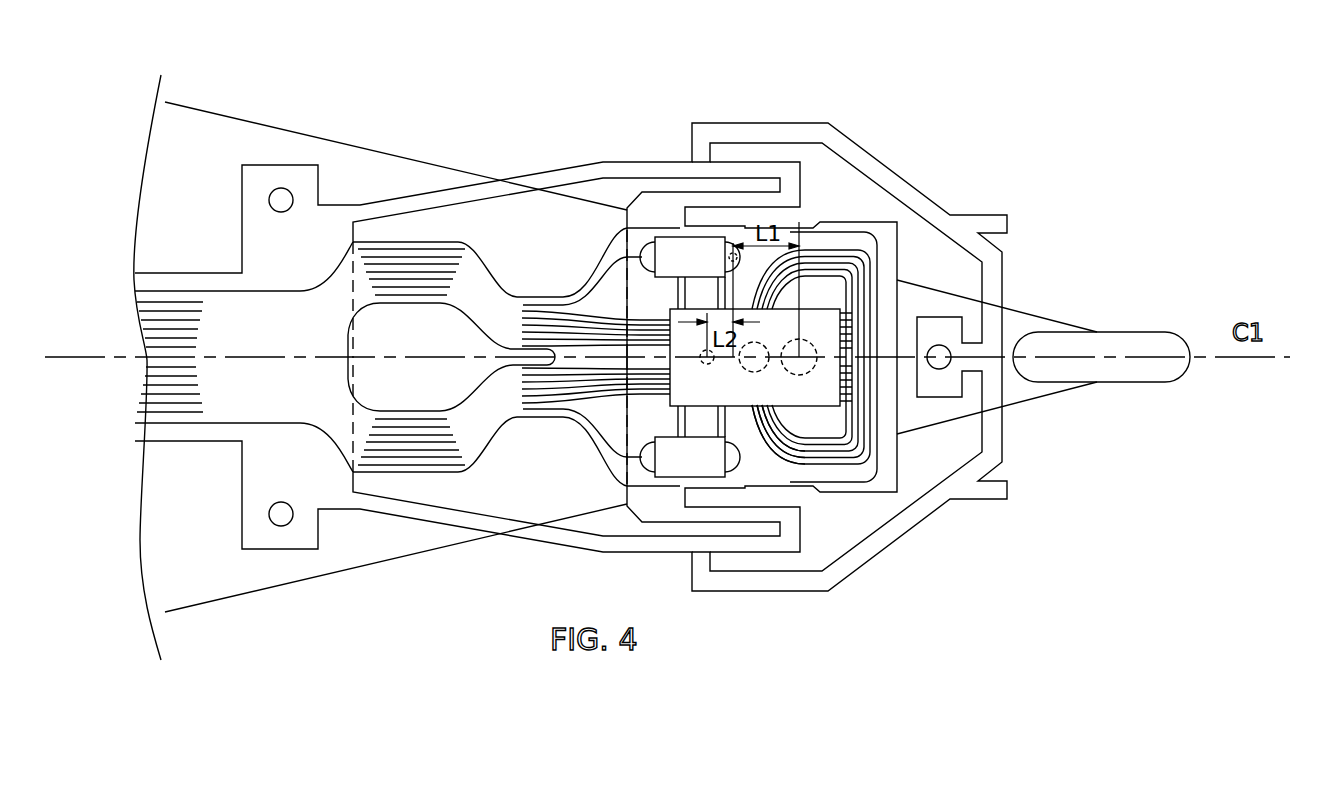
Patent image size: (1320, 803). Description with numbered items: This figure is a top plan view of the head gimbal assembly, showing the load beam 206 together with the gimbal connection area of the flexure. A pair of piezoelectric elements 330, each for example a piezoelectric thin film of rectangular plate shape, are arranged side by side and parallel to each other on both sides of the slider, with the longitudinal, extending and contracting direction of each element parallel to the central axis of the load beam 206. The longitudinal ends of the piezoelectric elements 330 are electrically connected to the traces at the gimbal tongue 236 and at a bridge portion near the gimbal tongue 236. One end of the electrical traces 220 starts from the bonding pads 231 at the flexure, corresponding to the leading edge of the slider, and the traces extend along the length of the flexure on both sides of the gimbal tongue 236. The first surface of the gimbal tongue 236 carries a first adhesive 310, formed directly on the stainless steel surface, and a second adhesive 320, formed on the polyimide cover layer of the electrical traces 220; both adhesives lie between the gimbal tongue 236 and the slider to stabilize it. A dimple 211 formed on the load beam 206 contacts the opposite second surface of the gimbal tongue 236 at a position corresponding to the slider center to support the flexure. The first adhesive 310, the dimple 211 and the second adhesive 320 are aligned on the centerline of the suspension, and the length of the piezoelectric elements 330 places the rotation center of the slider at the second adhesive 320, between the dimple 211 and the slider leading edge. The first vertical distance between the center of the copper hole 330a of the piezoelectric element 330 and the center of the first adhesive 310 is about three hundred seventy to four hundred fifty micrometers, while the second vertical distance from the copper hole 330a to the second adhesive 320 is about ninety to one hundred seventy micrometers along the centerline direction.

The load beam 206 is at (1037, 320).
The dimple 211 is at (757, 362).
The electrical traces 220 is at (843, 252).
The bonding pads 231 is at (865, 392).
The gimbal tongue 236 is at (807, 413).
The first adhesive 310 is at (813, 365).
The second adhesive 320 is at (710, 360).
The piezoelectric elements 330 is at (685, 258).
The copper hole 330a is at (733, 253).